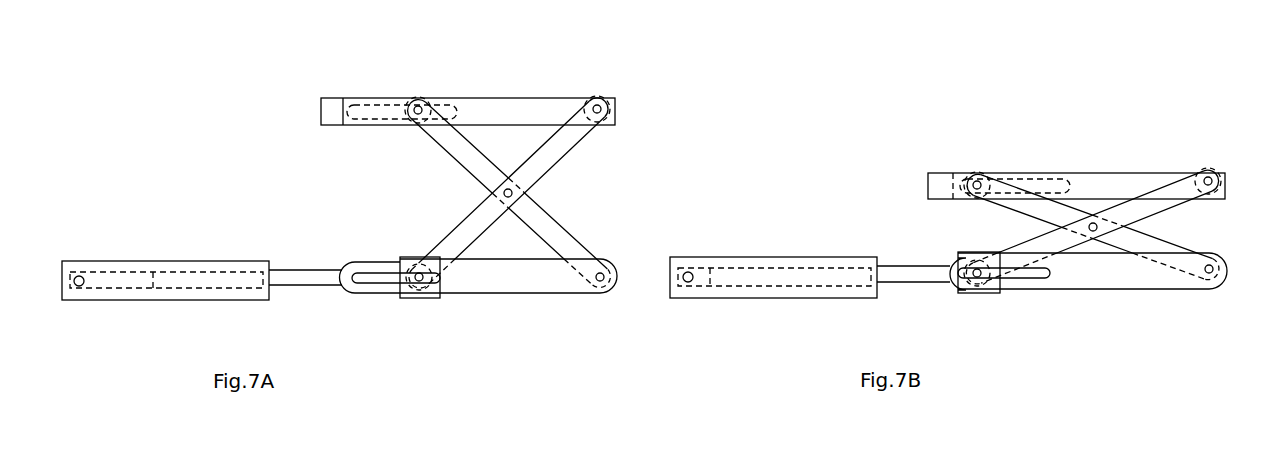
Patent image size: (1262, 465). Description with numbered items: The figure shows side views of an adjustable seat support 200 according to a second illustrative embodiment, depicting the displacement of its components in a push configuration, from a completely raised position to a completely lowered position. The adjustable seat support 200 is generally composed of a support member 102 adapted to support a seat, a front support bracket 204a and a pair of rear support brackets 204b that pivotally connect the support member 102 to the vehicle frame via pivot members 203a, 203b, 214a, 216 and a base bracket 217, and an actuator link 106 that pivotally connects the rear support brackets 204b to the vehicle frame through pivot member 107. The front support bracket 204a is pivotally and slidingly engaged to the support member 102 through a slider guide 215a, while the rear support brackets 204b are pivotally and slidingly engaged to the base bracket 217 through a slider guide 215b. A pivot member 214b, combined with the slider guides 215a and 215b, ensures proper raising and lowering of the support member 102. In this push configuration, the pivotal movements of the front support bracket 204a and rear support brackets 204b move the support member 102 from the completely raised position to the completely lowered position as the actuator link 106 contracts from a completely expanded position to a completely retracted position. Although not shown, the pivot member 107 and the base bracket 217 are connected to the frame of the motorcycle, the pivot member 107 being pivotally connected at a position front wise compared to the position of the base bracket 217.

In FIG. 7A, the adjustable seat support 200 is at (643, 48).
In FIG. 7B, the adjustable seat support 200 is at (937, 122).
In FIG. 7A, the support member 102 is at (553, 98).
In FIG. 7B, the support member 102 is at (1090, 172).
In FIG. 7A, the actuator link 106 is at (146, 260).
In FIG. 7B, the actuator link 106 is at (770, 258).
In FIG. 7A, the pivot member 107 is at (82, 286).
In FIG. 7B, the pivot member 107 is at (691, 282).
In FIG. 7A, the pivot member 203a is at (421, 106).
In FIG. 7B, the pivot member 203a is at (978, 180).
In FIG. 7A, the pivot member 203b is at (603, 109).
In FIG. 7B, the pivot member 203b is at (1207, 176).
In FIG. 7A, the front support bracket 204a is at (467, 213).
In FIG. 7B, the front support bracket 204a is at (1093, 226).
In FIG. 7A, the rear support bracket 204b is at (563, 168).
In FIG. 7B, the rear support bracket 204b is at (1092, 227).
In FIG. 7A, the pivot member 214a is at (601, 282).
In FIG. 7B, the pivot member 214a is at (1208, 274).
In FIG. 7A, the pivot member 214b is at (512, 195).
In FIG. 7B, the pivot member 214b is at (1092, 232).
In FIG. 7A, the slider guide 215a is at (367, 107).
In FIG. 7A, the slider guide 215b is at (378, 284).
In FIG. 7B, the slider guide 215b is at (1000, 274).
In FIG. 7A, the pivot member 216 is at (422, 282).
In FIG. 7B, the pivot member 216 is at (976, 278).
In FIG. 7A, the base bracket 217 is at (506, 294).
In FIG. 7B, the base bracket 217 is at (1092, 271).